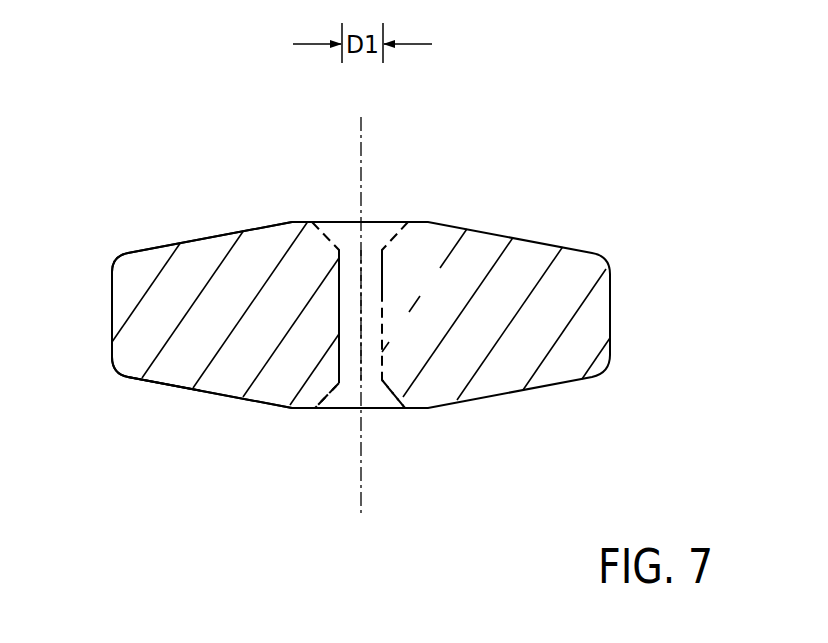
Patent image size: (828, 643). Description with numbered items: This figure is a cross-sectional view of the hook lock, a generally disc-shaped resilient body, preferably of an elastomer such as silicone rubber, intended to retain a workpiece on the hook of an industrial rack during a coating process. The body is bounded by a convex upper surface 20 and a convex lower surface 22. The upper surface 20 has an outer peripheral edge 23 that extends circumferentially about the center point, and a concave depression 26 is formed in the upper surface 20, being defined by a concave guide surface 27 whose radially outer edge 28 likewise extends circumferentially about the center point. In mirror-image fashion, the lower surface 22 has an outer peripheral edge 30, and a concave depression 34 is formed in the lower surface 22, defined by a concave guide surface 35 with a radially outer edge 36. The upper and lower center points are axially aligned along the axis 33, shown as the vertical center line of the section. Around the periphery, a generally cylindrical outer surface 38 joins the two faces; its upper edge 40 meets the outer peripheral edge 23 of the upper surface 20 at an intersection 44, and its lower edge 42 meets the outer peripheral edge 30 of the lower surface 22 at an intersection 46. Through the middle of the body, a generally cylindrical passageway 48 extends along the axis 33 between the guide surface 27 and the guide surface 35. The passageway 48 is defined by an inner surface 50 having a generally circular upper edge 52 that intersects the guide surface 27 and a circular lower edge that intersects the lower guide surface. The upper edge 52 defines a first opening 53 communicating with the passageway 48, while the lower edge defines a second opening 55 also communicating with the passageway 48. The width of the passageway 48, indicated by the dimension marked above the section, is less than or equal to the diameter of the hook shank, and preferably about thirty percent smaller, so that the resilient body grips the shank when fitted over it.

The convex upper surface 20 is at (218, 237).
The convex lower surface 22 is at (215, 396).
The outer peripheral edge 23 is at (138, 252).
The concave depression 26 is at (337, 231).
The concave guide surface 27 is at (396, 233).
The radially outer edge 28 is at (308, 222).
The outer peripheral edge 30 is at (130, 377).
The axis 33 is at (362, 460).
The concave depression 34 is at (345, 397).
The concave guide surface 35 is at (393, 395).
The radially outer edge 36 is at (313, 403).
The outer surface 38 is at (112, 317).
The upper edge 40 is at (112, 272).
The lower edge 42 is at (113, 358).
The intersection 44 is at (118, 262).
The intersection 46 is at (115, 367).
The passageway 48 is at (367, 362).
The inner surface 50 is at (336, 254).
The upper edge 52 is at (338, 388).
The first opening 53 is at (368, 233).
The second opening 55 is at (370, 397).